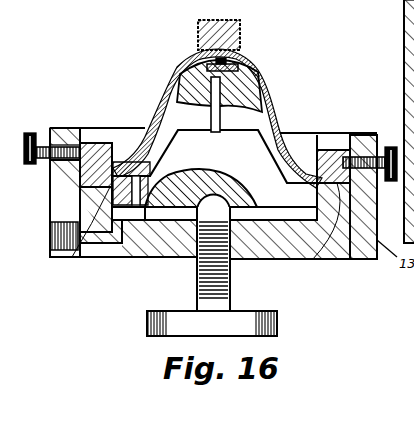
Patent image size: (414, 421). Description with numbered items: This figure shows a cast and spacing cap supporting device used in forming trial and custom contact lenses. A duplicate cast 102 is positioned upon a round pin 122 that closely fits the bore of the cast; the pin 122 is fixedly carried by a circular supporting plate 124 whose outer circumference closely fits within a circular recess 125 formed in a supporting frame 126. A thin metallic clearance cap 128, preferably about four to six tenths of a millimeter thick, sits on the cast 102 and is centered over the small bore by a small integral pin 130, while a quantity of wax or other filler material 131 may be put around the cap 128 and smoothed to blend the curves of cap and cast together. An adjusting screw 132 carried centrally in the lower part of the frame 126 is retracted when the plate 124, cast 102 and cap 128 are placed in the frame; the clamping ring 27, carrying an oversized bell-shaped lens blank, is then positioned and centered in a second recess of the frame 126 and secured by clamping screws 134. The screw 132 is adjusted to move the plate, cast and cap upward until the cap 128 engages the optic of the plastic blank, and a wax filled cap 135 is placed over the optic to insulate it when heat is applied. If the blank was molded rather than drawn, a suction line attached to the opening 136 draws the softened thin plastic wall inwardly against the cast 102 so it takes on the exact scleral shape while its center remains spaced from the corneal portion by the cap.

The clamping ring 27 is at (338, 150).
The cast 102 is at (268, 100).
The round pin 122 is at (210, 112).
The circular supporting plate 124 is at (137, 222).
The circular recess 125 is at (78, 251).
The supporting frame 126 is at (328, 248).
The metallic clearance cap 128 is at (240, 55).
The small integral pin 130 is at (244, 74).
The filler material 131 is at (236, 65).
The adjusting screw 132 is at (228, 292).
The clamping screws 134 is at (33, 136).
The wax filled cap 135 is at (197, 30).
The opening 136 is at (50, 236).